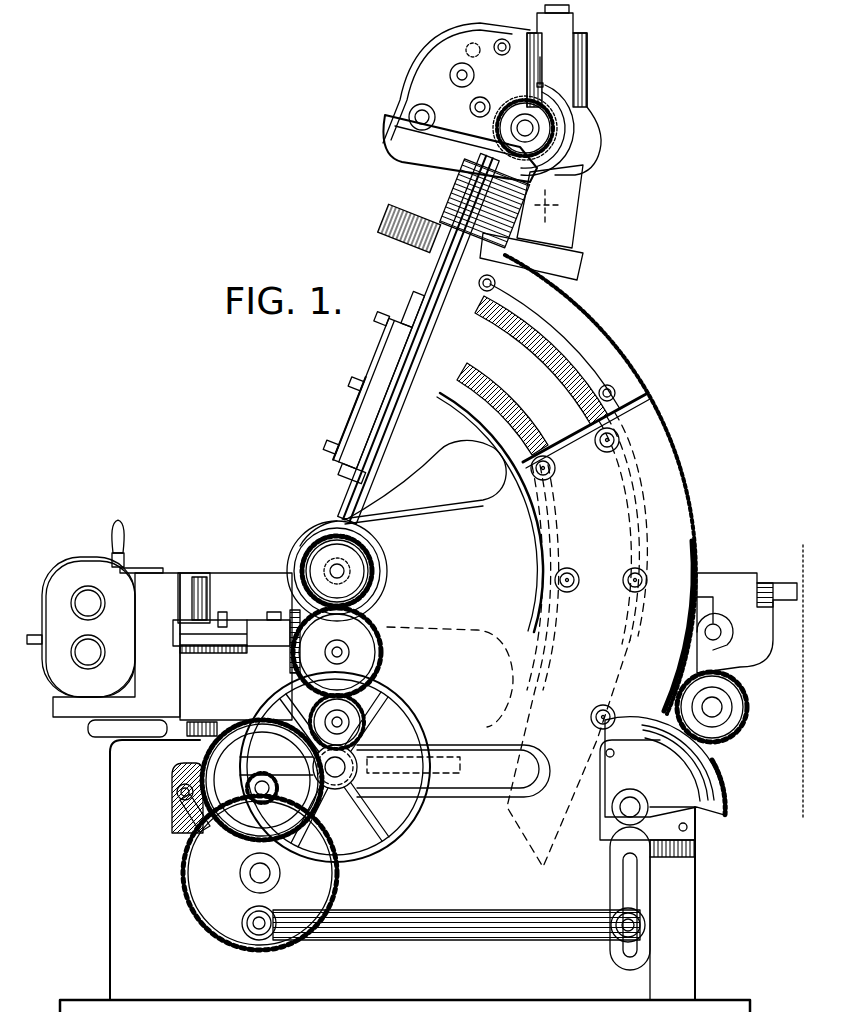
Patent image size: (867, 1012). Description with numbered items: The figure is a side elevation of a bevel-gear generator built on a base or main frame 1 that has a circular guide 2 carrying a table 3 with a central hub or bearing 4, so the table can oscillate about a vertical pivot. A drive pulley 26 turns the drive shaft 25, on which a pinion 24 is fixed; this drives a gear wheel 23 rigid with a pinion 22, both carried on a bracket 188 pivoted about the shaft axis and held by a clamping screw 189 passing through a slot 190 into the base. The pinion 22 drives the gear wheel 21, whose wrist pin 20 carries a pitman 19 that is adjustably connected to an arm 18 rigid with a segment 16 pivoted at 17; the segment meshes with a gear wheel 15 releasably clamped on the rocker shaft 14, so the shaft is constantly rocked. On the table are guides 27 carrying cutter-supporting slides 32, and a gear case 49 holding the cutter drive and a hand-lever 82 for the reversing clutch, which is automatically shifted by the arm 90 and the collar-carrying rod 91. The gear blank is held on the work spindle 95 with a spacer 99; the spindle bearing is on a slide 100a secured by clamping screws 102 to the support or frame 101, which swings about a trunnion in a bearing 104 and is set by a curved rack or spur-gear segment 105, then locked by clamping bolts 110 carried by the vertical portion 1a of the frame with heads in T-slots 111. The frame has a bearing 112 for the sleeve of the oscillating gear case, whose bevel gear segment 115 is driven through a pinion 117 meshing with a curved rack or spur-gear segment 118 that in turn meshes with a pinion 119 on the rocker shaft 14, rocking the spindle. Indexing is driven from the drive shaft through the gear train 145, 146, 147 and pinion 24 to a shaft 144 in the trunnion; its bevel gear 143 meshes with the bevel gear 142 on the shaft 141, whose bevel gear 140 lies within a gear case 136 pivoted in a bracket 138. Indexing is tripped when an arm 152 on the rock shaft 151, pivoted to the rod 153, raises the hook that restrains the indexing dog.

The base or main frame 1 is at (431, 778).
The vertical portion of the main frame 1a is at (676, 490).
The circular guide 2 is at (178, 742).
The table 3 is at (240, 654).
The central hub or bearing 4 is at (56, 561).
The rocker shaft 14 is at (408, 70).
The gear wheel 15 is at (740, 690).
The segment 16 is at (730, 795).
The pivot 17 is at (636, 800).
The arm 18 is at (608, 880).
The pitman 19 is at (498, 940).
The wrist pin 20 is at (255, 940).
The gear wheel 21 is at (210, 915).
The pinion 22 is at (236, 830).
The gear wheel 23 is at (232, 745).
The pinion 24 is at (365, 752).
The drive shaft 25 is at (340, 795).
The drive pulley 26 is at (405, 708).
The guides 27 is at (205, 653).
The cutter-supporting slides 32 is at (258, 630).
The gear case 49 is at (45, 603).
The hand-lever 82 is at (126, 536).
The arm 90 is at (207, 612).
The rod 91 is at (238, 620).
The work spindle 95 is at (396, 303).
The spacer 99 is at (336, 516).
The slide 100a is at (312, 422).
The support or frame 101 is at (472, 446).
The clamping screws 102 is at (299, 321).
The bearing 104 is at (296, 542).
The curved rack or spur-gear segment 105 is at (596, 325).
The clamping bolts 110 is at (556, 470).
The T-slots 111 is at (537, 357).
The bearing 112 is at (617, 711).
The bevel gear segment 115 is at (428, 162).
The pinion 117 is at (460, 194).
The curved rack or spur-gear segment 118 is at (392, 216).
The pinion 119 is at (738, 715).
The gear case 136 is at (505, 98).
The bracket 138 is at (590, 118).
The bevel gear 140 is at (497, 130).
The shaft 141 is at (336, 412).
The bevel gear 142 is at (327, 530).
The bevel gear 143 is at (310, 571).
The shaft 144 is at (345, 576).
The gear 145 is at (380, 555).
The gear 146 is at (383, 652).
The gear 147 is at (350, 722).
The rock shaft 151 is at (500, 40).
The arm 152 is at (540, 30).
The rod 153 is at (548, 70).
The bracket 188 is at (172, 792).
The clamping screw 189 is at (177, 800).
The slot 190 is at (192, 832).